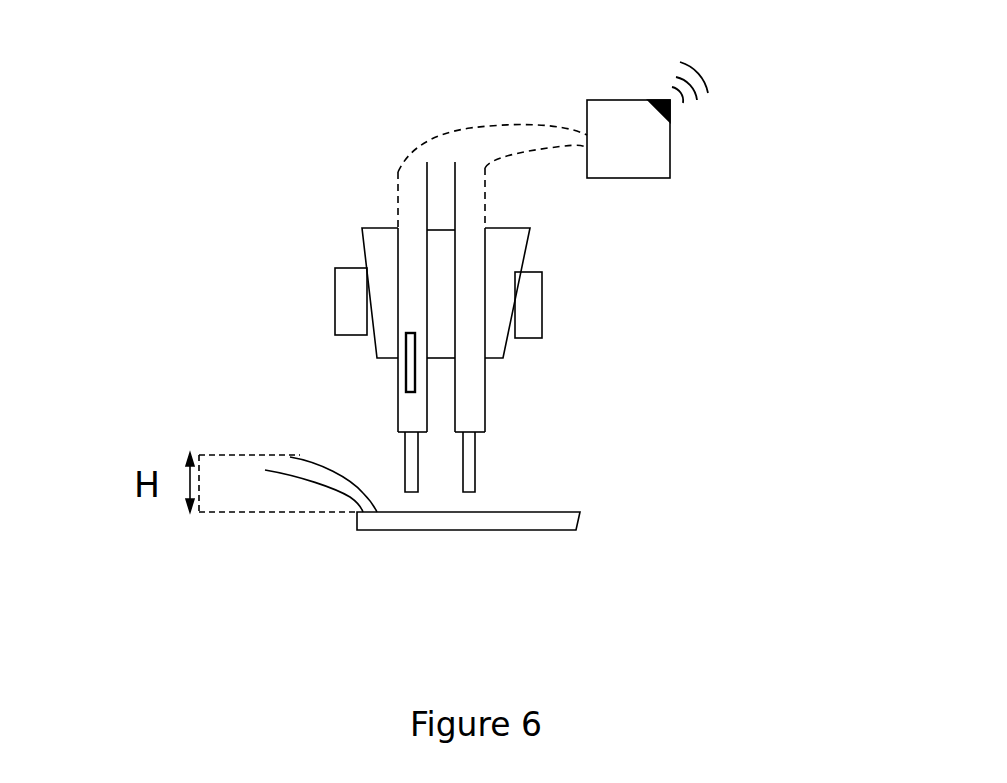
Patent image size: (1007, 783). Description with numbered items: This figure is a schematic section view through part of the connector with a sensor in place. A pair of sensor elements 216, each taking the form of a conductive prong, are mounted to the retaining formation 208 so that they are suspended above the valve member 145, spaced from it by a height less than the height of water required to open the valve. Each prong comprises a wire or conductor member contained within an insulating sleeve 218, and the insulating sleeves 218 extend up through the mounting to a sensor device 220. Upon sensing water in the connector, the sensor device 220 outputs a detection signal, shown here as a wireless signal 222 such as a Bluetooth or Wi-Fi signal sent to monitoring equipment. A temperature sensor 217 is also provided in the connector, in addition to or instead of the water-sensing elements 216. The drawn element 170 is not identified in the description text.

The valve member 145 is at (560, 518).
The sensor 170 is at (293, 463).
The retaining formation 208 is at (530, 307).
The sensor element 216 is at (408, 497).
The temperature sensor 217 is at (407, 381).
The insulating sleeve 218 is at (415, 405).
The sensor device 220 is at (658, 157).
The wireless signal 222 is at (703, 80).